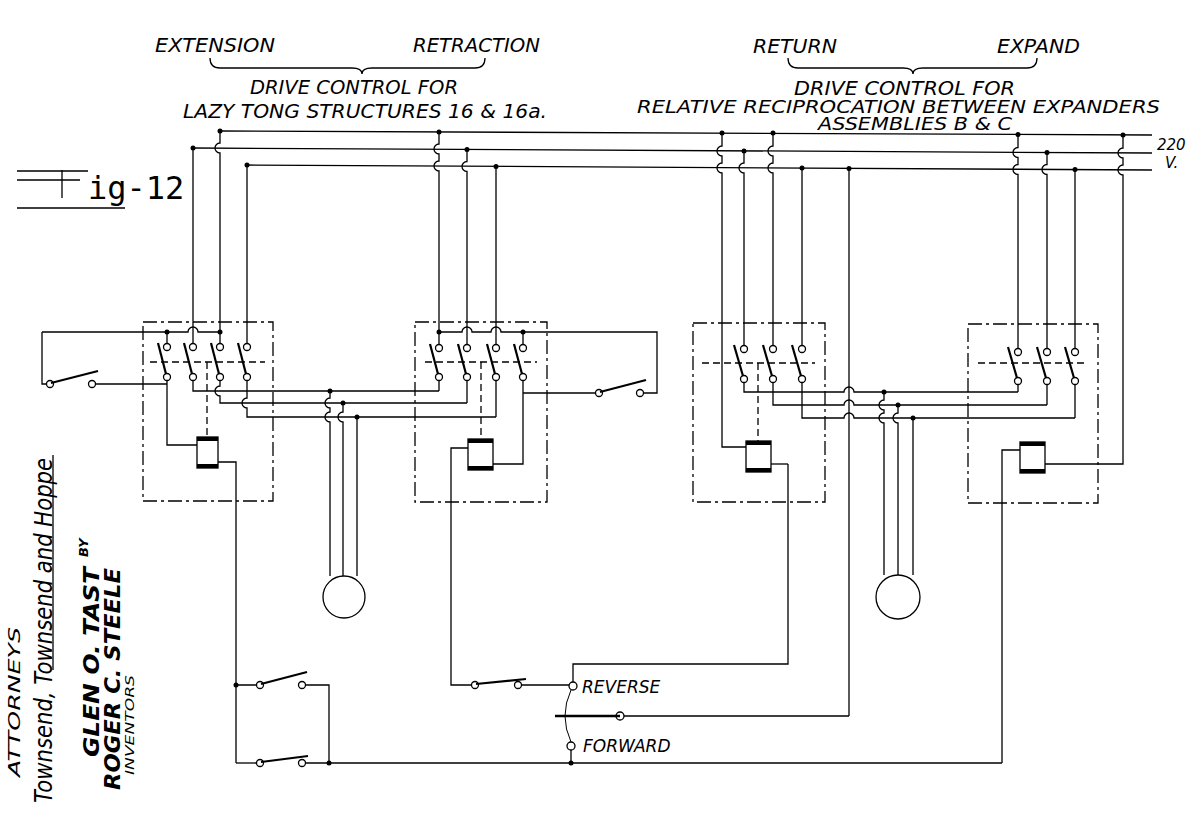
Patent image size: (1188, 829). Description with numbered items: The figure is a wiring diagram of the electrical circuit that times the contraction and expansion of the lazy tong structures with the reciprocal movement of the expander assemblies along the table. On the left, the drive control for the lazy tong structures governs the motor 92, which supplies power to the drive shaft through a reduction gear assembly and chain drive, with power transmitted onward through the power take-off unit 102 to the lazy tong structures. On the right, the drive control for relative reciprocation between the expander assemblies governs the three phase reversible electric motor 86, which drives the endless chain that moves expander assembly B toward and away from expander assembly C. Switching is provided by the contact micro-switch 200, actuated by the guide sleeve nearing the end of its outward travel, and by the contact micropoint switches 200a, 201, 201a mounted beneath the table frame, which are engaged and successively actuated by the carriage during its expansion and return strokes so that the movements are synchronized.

The contact micro-switch 200 is at (68, 387).
The contact micropoint switch 201 is at (620, 394).
The contact micropoint switch 200a is at (296, 757).
The contact micropoint switch 201a is at (494, 682).
The power take-off unit 102 is at (594, 714).
The motor 92 is at (366, 592).
The three phase reversible electric motor 86 is at (921, 594).